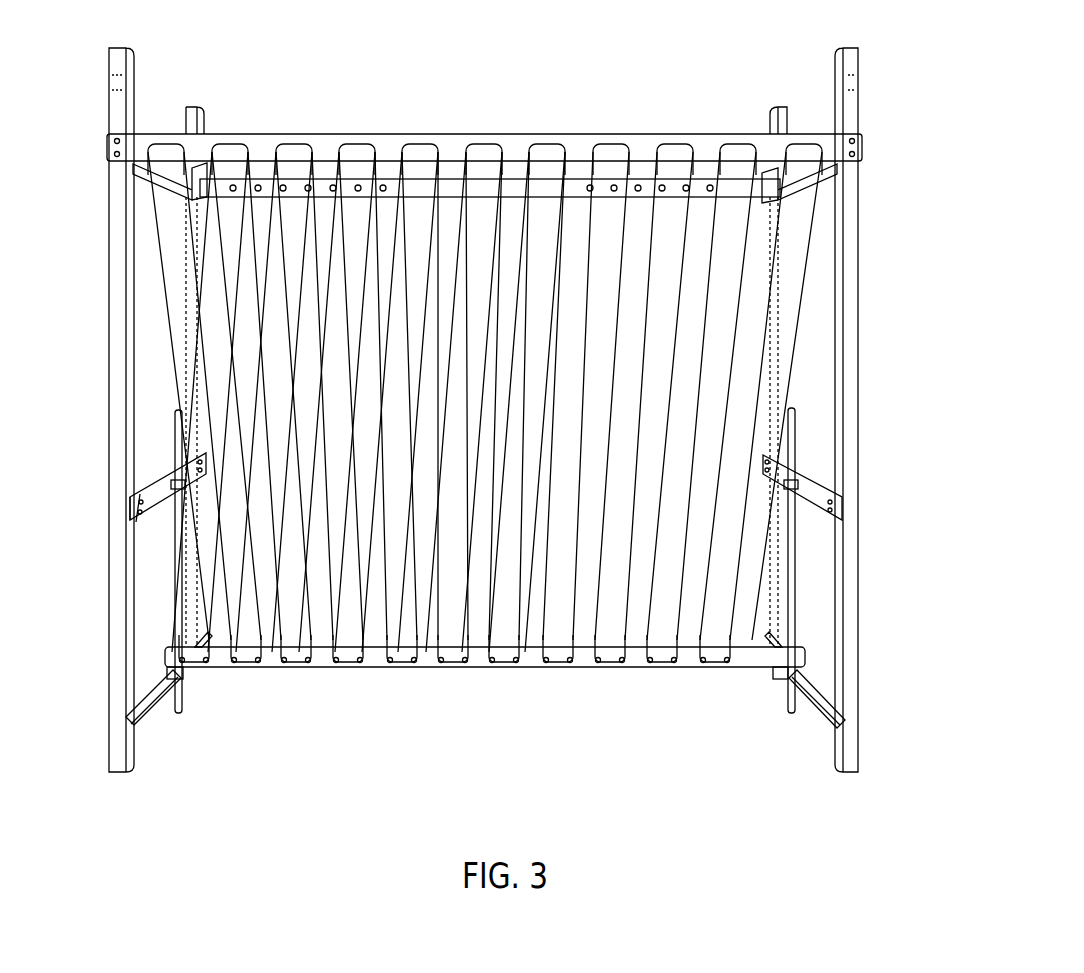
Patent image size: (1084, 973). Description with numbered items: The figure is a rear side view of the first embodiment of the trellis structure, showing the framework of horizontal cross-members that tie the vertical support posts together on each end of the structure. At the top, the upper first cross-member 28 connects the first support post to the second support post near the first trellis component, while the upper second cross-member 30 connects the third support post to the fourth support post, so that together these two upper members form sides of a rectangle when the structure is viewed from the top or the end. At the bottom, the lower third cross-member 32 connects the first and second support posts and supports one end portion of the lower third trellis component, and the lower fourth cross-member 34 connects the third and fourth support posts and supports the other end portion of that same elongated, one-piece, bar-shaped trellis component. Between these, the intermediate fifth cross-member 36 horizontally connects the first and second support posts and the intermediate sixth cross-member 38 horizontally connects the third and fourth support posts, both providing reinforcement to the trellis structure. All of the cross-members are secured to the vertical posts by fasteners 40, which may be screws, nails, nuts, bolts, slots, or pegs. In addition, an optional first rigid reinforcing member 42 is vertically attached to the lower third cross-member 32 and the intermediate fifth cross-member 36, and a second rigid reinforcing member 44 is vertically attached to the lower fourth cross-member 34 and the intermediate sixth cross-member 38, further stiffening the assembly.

The upper first cross-member 28 is at (797, 168).
The upper second cross-member 30 is at (170, 172).
The lower third cross-member 32 is at (812, 703).
The lower fourth cross-member 34 is at (153, 687).
The intermediate fifth cross-member 36 is at (812, 488).
The intermediate sixth cross-member 38 is at (163, 468).
The fasteners 40 is at (130, 516).
The first rigid reinforcing member 42 is at (795, 577).
The second rigid reinforcing member 44 is at (172, 563).